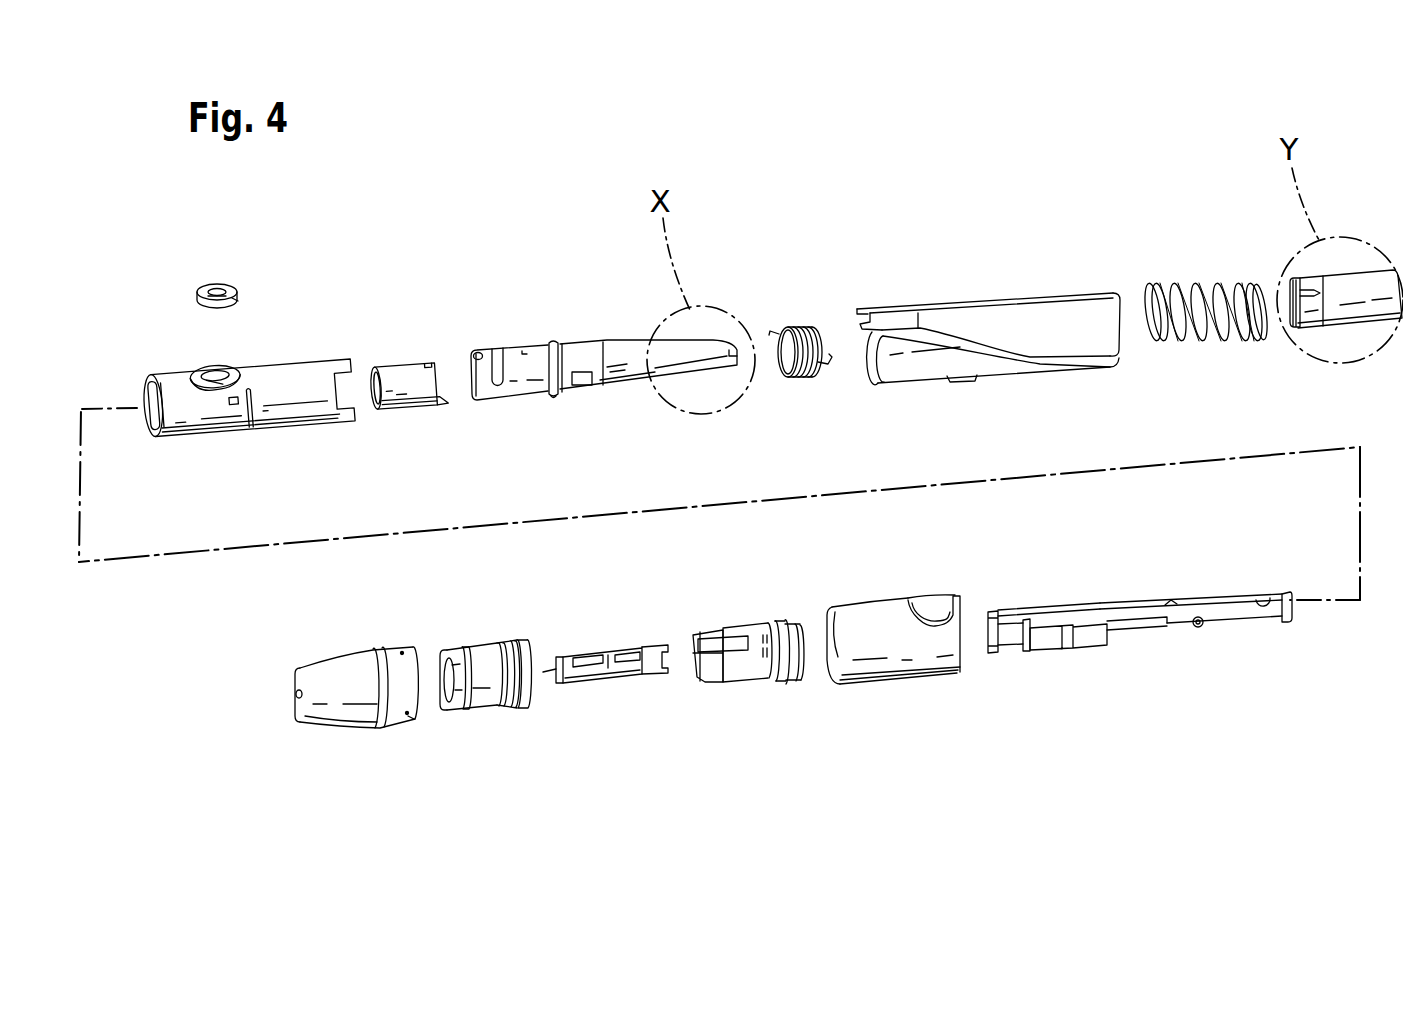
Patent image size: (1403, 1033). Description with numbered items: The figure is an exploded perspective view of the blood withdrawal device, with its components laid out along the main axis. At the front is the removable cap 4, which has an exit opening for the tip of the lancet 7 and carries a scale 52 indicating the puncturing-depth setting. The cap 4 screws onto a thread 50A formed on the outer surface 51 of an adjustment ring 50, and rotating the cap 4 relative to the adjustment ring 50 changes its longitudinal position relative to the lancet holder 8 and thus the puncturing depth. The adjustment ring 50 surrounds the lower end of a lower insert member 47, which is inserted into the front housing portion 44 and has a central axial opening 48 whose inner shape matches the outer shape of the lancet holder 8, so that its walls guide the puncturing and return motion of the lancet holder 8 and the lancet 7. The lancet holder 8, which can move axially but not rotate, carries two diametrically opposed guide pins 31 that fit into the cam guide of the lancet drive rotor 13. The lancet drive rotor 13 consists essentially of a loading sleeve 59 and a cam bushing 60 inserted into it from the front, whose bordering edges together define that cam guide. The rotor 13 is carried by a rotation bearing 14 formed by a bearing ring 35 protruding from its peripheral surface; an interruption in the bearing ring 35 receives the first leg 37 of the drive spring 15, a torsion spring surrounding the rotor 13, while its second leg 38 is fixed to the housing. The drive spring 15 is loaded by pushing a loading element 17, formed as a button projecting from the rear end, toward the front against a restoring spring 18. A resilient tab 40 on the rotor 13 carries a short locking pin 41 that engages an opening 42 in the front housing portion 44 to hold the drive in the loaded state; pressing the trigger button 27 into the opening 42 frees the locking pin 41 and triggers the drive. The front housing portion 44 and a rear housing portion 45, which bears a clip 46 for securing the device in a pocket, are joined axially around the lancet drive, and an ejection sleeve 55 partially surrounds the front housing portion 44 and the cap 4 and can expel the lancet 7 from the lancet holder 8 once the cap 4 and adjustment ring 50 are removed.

The removable cap 4 is at (330, 667).
The lancet 7 is at (612, 674).
The lancet holder 8 is at (1136, 612).
The lancet drive rotor 13 is at (604, 392).
The rotation bearing 14 is at (548, 338).
The drive spring 15 is at (790, 374).
The loading element 17 is at (1340, 312).
The restoring spring 18 is at (1200, 298).
The trigger button 27 is at (215, 290).
The guide pin 31 is at (1198, 628).
The bearing ring 35 is at (553, 398).
The first leg 37 is at (779, 334).
The second leg 38 is at (826, 366).
The resilient tab 40 is at (496, 378).
The locking pin 41 is at (476, 354).
The opening 42 is at (228, 372).
The front housing portion 44 is at (292, 415).
The rear housing portion 45 is at (968, 303).
The clip 46 is at (975, 382).
The lower insert member 47 is at (752, 670).
The central axial opening 48 is at (698, 672).
The adjustment ring 50 is at (474, 664).
The thread 50A is at (496, 646).
The outer surface 51 is at (510, 690).
The scale 52 is at (405, 717).
The ejection sleeve 55 is at (917, 658).
The loading sleeve 59 is at (618, 356).
The cam bushing 60 is at (408, 385).